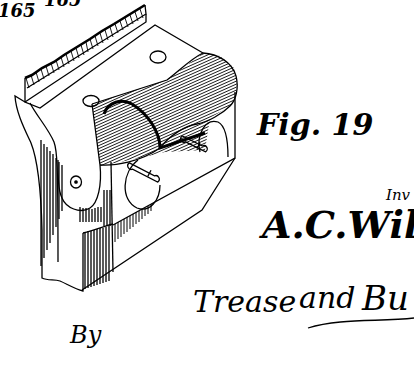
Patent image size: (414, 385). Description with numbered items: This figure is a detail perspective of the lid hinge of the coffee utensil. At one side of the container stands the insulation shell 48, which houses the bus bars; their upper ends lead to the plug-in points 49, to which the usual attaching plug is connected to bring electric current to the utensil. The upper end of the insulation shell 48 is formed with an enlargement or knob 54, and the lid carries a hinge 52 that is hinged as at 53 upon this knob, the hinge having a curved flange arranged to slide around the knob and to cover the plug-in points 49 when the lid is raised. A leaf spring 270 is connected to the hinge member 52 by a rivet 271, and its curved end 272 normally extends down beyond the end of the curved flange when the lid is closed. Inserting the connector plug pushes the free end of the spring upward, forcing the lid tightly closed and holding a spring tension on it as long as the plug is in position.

The insulation shell 48 is at (50, 246).
The plug-in points 49 is at (190, 152).
The hinge 52 is at (146, 14).
The hinge point 53 is at (70, 182).
The enlargement or knob 54 is at (113, 262).
The leaf spring 270 is at (208, 60).
The rivet 271 is at (155, 63).
The curved end 272 is at (232, 107).